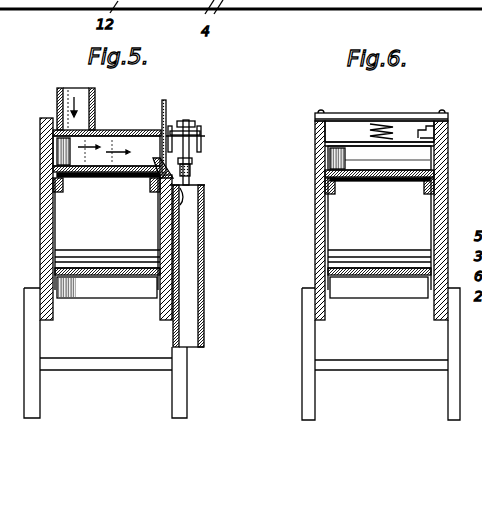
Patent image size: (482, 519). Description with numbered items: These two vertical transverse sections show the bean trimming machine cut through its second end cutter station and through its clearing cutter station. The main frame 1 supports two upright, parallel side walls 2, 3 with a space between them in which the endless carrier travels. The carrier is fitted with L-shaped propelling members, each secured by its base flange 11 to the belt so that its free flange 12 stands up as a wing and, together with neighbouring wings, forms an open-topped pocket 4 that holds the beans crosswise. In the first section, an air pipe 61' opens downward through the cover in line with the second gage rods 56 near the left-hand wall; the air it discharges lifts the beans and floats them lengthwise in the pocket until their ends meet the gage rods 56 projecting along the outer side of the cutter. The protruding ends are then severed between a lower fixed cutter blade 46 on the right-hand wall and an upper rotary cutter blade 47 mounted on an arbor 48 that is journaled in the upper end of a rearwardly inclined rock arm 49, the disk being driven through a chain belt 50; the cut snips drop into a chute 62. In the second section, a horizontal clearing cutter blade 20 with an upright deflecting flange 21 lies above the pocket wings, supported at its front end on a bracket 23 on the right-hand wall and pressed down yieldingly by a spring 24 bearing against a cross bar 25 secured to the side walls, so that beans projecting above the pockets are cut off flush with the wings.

In FIG. 5, the main frame 1 is at (105, 353).
In FIG. 6, the main frame 1 is at (381, 354).
In FIG. 5, the right-hand side wall 2 is at (160, 320).
In FIG. 6, the right-hand side wall 2 is at (434, 320).
In FIG. 5, the left-hand side wall 3 is at (52, 320).
In FIG. 6, the left-hand side wall 3 is at (325, 320).
In FIG. 5, the pocket 4 is at (108, 142).
In FIG. 6, the pocket 4 is at (330, 157).
In FIG. 5, the base flange 11 is at (88, 170).
In FIG. 6, the base flange 11 is at (361, 175).
In FIG. 5, the free flange 12 is at (62, 152).
In FIG. 6, the free flange 12 is at (430, 157).
In FIG. 6, the clearing cutter blade 20 is at (400, 142).
In FIG. 6, the deflecting flange 21 is at (344, 130).
In FIG. 6, the bracket 23 is at (430, 130).
In FIG. 6, the spring 24 is at (398, 146).
In FIG. 6, the cross bar 25 is at (367, 128).
In FIG. 5, the lower fixed cutter blade 46 is at (198, 177).
In FIG. 5, the upper rotary cutter blade 47 is at (167, 112).
In FIG. 5, the arbor 48 is at (201, 134).
In FIG. 5, the rock arm 49 is at (178, 187).
In FIG. 5, the chain belt 50 is at (196, 165).
In FIG. 5, the gage rods 56 is at (182, 193).
In FIG. 5, the air pipe 61' is at (50, 108).
In FIG. 5, the chute 62 is at (193, 270).